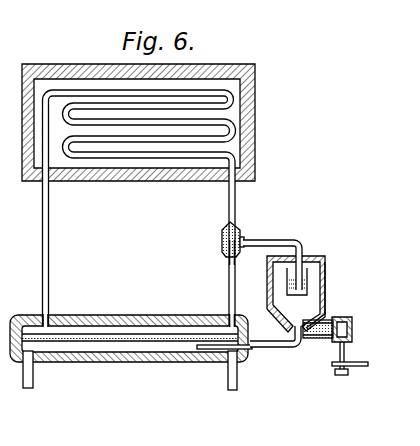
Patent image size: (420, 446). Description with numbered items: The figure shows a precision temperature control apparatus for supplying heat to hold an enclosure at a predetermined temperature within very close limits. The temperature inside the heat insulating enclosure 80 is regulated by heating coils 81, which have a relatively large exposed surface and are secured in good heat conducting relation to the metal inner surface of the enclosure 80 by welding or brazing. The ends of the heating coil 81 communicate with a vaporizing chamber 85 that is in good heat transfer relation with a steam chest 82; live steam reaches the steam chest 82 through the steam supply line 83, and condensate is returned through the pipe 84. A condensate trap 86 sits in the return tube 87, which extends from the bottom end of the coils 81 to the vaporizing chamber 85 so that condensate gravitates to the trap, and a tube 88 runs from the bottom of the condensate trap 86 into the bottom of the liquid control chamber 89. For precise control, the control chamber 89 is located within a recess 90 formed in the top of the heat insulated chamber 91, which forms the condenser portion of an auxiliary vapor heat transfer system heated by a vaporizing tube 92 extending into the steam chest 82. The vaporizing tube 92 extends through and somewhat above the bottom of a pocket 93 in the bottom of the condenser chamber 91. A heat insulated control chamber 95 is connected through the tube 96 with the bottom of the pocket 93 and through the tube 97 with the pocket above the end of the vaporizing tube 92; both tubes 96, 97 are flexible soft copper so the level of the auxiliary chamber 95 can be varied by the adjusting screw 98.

The heat insulating enclosure 80 is at (256, 93).
The heating coils 81 is at (235, 130).
The steam chest 82 is at (136, 353).
The steam supply line 83 is at (238, 379).
The pipe 84 is at (34, 380).
The vaporizing chamber 85 is at (105, 332).
The condensate trap 86 is at (222, 233).
The return tube 87 is at (229, 198).
The tube 88 is at (262, 240).
The liquid control chamber 89 is at (310, 272).
The recess 90 is at (310, 282).
The heat insulated chamber 91 is at (326, 294).
The vaporizing tube 92 is at (211, 350).
The pocket 93 is at (290, 328).
The heat insulated control chamber 95 is at (353, 326).
The tube 96 is at (322, 339).
The tube 97 is at (326, 318).
The adjusting screw 98 is at (346, 349).